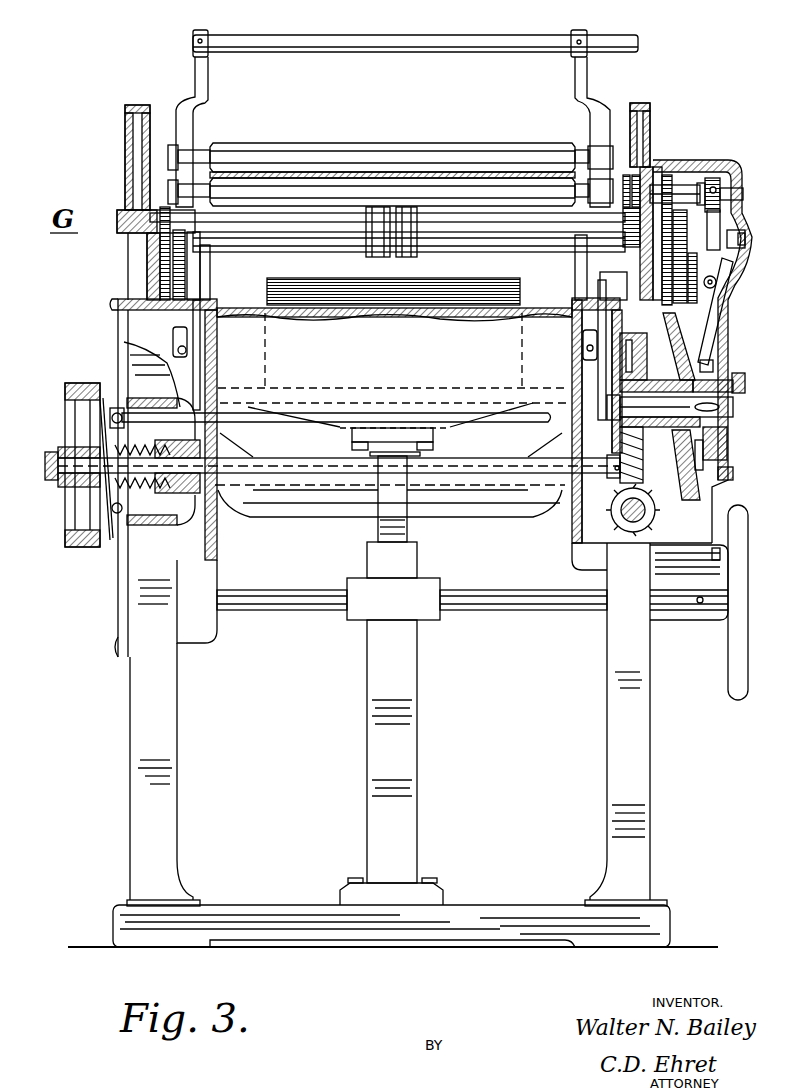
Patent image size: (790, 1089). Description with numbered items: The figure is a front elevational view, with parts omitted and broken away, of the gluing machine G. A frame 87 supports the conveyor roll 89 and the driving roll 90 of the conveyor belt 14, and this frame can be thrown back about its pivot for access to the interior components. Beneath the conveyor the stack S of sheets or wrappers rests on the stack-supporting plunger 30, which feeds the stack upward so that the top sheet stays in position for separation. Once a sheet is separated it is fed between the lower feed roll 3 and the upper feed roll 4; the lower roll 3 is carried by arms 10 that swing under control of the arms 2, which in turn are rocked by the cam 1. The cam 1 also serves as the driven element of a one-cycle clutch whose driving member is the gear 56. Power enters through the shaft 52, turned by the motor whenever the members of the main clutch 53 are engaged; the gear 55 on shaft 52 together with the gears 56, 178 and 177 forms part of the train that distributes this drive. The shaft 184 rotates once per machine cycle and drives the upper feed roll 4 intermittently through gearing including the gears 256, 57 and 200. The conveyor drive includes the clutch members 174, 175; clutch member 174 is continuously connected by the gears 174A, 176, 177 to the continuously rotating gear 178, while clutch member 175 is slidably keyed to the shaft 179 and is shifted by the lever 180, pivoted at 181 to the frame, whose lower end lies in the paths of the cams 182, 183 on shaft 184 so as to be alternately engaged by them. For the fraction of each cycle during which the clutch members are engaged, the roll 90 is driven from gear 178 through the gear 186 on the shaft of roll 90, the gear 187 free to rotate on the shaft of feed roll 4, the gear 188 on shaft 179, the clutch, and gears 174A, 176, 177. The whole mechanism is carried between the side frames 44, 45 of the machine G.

The frame 87 is at (184, 128).
The conveyor 14 is at (273, 167).
The conveyor roll 89 is at (344, 158).
The driving roll 90 is at (373, 190).
The upper feed roll 4 is at (403, 217).
The lower feed roll 3 is at (377, 250).
The side frame 44 is at (138, 265).
The arms 10 is at (205, 265).
The stack S is at (437, 293).
The gear 178 is at (567, 382).
The stack-supporting plunger 30 is at (407, 515).
The shaft 52 is at (67, 480).
The main clutch 53 is at (90, 428).
The side frame 45 is at (640, 738).
The gear 174A is at (660, 178).
The gear 186 is at (627, 173).
The gear 188 is at (635, 173).
The gear 187 is at (630, 227).
The gear 177 is at (667, 268).
The gear 57 is at (683, 303).
The clutch member 174 is at (680, 182).
The clutch member 175 is at (705, 183).
The shaft 179 is at (733, 188).
The gear 176 is at (712, 216).
The gear 200 is at (685, 233).
The lever 180 is at (716, 283).
The pivot 181 is at (706, 298).
The cam 182 is at (718, 367).
The cam 1 is at (627, 370).
The arms 2 is at (607, 387).
The gear 56 is at (623, 333).
The one-cycle shaft 184 is at (728, 403).
The gear 256 is at (692, 508).
The cam 183 is at (700, 453).
The gear 55 is at (705, 485).
The gluing mechanism G is at (52, 228).